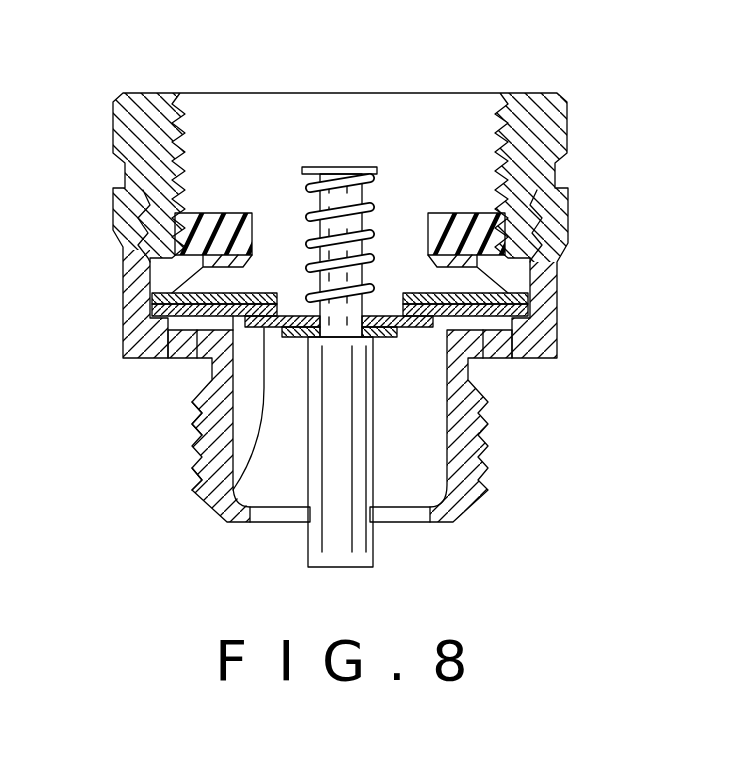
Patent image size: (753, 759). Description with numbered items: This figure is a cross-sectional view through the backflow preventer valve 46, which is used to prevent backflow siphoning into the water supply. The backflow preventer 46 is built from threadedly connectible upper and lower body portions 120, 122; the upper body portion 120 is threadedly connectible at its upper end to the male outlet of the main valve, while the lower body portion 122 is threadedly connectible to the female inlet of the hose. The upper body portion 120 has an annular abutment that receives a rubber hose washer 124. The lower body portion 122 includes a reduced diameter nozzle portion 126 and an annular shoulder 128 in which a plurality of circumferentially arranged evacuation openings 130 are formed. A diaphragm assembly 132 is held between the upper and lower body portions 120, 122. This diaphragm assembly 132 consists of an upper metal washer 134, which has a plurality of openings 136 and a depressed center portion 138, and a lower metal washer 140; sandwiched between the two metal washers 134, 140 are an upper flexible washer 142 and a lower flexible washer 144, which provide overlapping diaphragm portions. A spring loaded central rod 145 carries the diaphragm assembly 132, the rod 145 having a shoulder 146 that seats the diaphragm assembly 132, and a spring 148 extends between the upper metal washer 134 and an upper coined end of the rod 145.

The backflow preventer valve 46 is at (565, 72).
The upper body portion 120 is at (567, 128).
The lower body portion 122 is at (557, 325).
The rubber hose washer 124 is at (230, 213).
The reduced diameter nozzle portion 126 is at (495, 432).
The annular shoulder 128 is at (151, 360).
The evacuation openings 130 is at (178, 362).
The diaphragm assembly 132 is at (433, 182).
The upper metal washer 134 is at (455, 237).
The openings 136 is at (475, 293).
The depressed center portion 138 is at (292, 293).
The lower metal washer 140 is at (420, 322).
The upper flexible washer 142 is at (197, 413).
The lower flexible washer 144 is at (197, 483).
The spring loaded central rod 145 is at (360, 165).
The shoulder 146 is at (373, 337).
The spring 148 is at (307, 187).